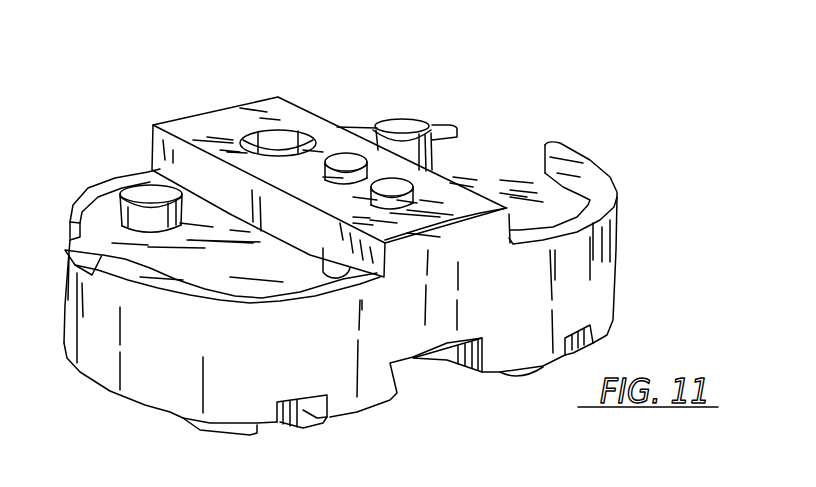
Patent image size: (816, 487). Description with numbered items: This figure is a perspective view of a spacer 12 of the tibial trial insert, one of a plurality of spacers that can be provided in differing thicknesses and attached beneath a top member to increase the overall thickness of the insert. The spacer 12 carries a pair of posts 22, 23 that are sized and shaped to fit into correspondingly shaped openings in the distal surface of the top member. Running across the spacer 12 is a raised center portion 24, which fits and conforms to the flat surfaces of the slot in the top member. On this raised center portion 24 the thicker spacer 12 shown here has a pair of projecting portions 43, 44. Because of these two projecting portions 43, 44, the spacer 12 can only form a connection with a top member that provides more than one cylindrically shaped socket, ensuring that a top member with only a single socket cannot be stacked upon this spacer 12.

The spacer 12 is at (620, 250).
The post 22 is at (415, 118).
The post 23 is at (150, 188).
The raised center portion 24 is at (228, 105).
The projecting portion 43 is at (345, 152).
The projecting portion 44 is at (397, 184).